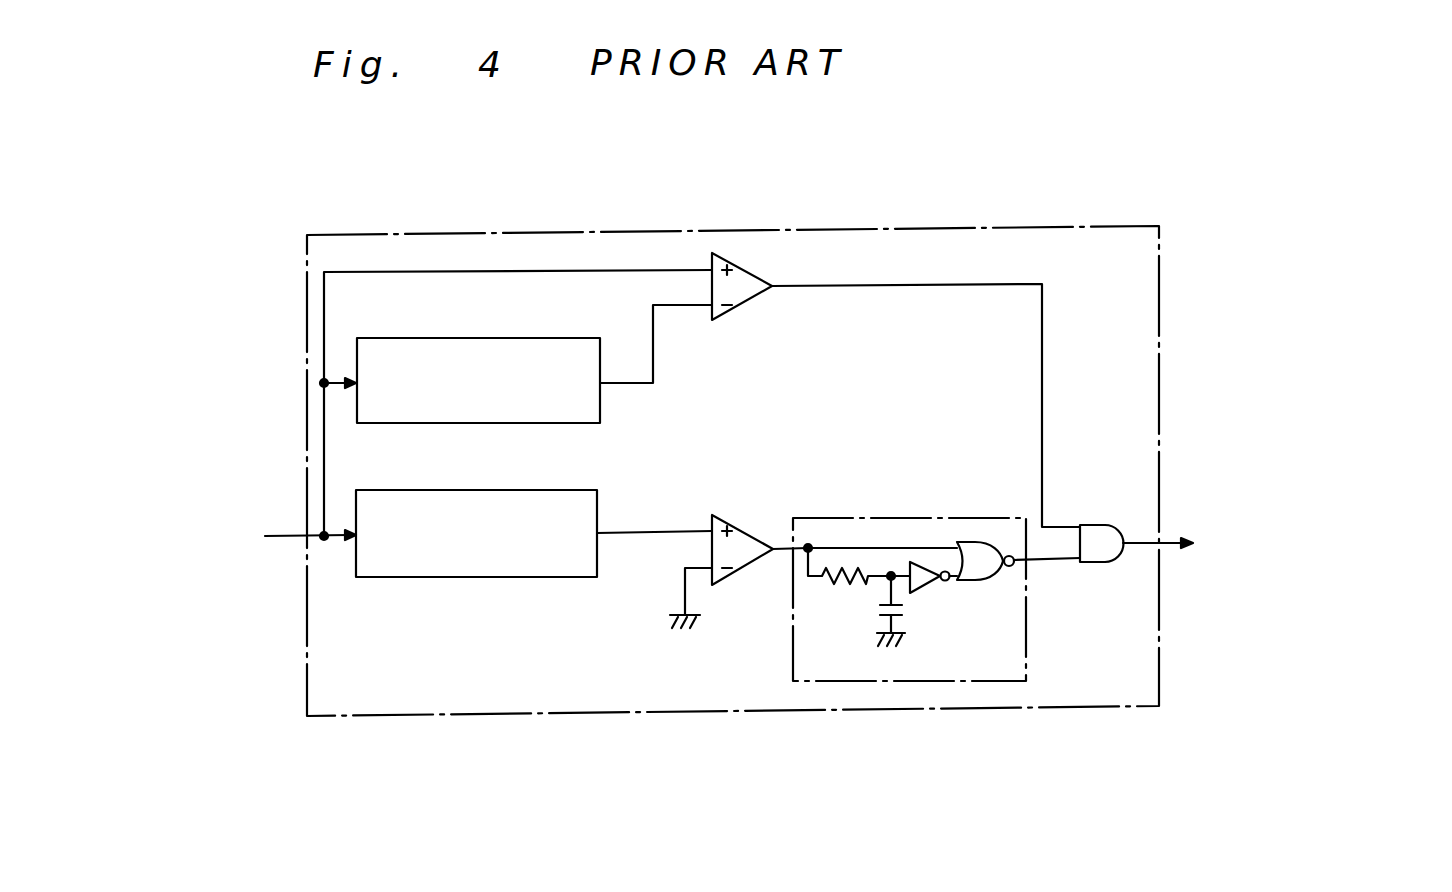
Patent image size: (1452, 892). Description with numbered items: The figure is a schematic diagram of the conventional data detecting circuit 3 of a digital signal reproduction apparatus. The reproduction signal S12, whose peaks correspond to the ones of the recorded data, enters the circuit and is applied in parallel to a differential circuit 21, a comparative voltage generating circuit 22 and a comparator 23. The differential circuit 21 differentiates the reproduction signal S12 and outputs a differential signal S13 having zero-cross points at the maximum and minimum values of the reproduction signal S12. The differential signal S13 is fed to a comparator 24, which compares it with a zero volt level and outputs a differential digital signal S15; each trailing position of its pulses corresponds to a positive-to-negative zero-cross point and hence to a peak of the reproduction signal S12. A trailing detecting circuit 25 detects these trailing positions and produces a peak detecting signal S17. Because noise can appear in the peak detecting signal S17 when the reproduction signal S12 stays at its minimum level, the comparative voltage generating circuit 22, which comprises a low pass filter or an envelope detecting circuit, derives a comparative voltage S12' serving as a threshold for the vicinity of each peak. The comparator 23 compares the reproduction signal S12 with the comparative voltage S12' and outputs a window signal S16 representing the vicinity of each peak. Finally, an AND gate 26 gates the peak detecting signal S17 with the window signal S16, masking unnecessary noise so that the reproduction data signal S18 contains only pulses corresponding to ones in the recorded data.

The data detecting circuit 3 is at (1160, 317).
The differential circuit 21 is at (537, 490).
The comparative voltage generating circuit 22 is at (567, 338).
The comparator 23 is at (752, 291).
The comparator 24 is at (738, 540).
The trailing detecting circuit 25 is at (905, 518).
The AND gate 26 is at (1095, 530).
The reproduction signal S12 is at (396, 419).
The comparative voltage S12' is at (671, 344).
The differential signal S13 is at (650, 534).
The differential digital signal S15 is at (774, 550).
The window signal S16 is at (878, 284).
The peak detecting signal S17 is at (1062, 560).
The reproduction data signal S18 is at (1263, 537).